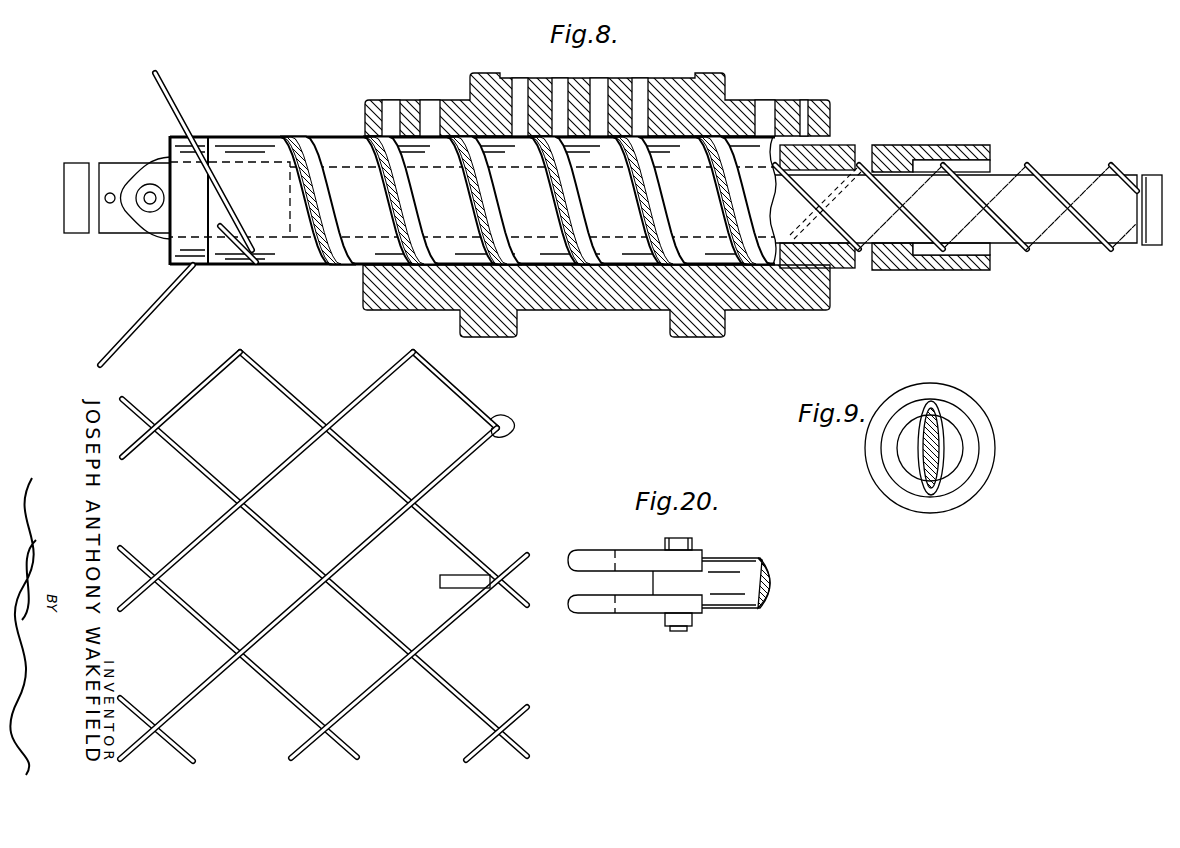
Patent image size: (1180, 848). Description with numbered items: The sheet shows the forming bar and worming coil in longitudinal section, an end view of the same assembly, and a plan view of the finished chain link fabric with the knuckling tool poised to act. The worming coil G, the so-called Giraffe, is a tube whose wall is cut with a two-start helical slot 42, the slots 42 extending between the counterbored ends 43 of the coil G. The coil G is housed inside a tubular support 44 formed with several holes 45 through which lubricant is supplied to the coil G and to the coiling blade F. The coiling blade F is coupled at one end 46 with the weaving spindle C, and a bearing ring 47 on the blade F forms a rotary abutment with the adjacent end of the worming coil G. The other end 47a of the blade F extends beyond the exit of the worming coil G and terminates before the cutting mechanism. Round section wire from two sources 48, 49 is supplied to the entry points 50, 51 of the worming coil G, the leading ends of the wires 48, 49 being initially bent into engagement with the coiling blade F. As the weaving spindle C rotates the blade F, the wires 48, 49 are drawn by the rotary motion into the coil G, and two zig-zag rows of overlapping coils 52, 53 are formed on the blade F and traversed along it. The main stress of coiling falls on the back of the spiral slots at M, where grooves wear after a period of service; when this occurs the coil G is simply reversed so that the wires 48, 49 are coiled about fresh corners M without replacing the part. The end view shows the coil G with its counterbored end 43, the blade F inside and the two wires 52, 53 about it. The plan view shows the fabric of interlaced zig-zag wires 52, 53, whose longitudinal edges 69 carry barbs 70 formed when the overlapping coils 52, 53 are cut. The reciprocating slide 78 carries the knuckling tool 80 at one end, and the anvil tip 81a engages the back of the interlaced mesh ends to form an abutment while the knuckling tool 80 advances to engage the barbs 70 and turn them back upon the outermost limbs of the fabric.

In FIG. 8, the weaving spindle C is at (75, 166).
In FIG. 8, the two-start helical slot 42 is at (302, 146).
In FIG. 8, the counterbored ends 43 is at (252, 140).
In FIG. 9, the counterbored ends 43 is at (958, 412).
In FIG. 8, the tubular support 44 is at (596, 196).
In FIG. 8, the holes 45 is at (430, 102).
In FIG. 8, the end of coiling blade 46 is at (168, 158).
In FIG. 8, the bearing ring 47 is at (473, 200).
In FIG. 8, the other end of blade 47a is at (1058, 172).
In FIG. 8, the wire 48 is at (178, 112).
In FIG. 8, the wire 49 is at (140, 320).
In FIG. 8, the entry point 50 is at (244, 262).
In FIG. 8, the entry point 51 is at (302, 160).
In FIG. 8, the zig-zag wire 52 is at (956, 207).
In FIG. 9, the zig-zag wire 52 is at (918, 446).
In FIG. 20, the zig-zag wire 52 is at (212, 378).
In FIG. 8, the zig-zag wire 53 is at (948, 207).
In FIG. 9, the zig-zag wire 53 is at (944, 455).
In FIG. 20, the zig-zag wire 53 is at (212, 468).
In FIG. 8, the coiling blade F is at (272, 146).
In FIG. 9, the coiling blade F is at (940, 448).
In FIG. 8, the worming coil G is at (330, 147).
In FIG. 9, the worming coil G is at (926, 392).
In FIG. 8, the back of spiral slots M is at (858, 160).
In FIG. 20, the longitudinal edges 69 is at (519, 705).
In FIG. 20, the barbs 70 is at (522, 596).
In FIG. 20, the reciprocating slide 78 is at (726, 562).
In FIG. 20, the knuckling tool 80 is at (628, 558).
In FIG. 20, the anvil tip 81a is at (452, 577).